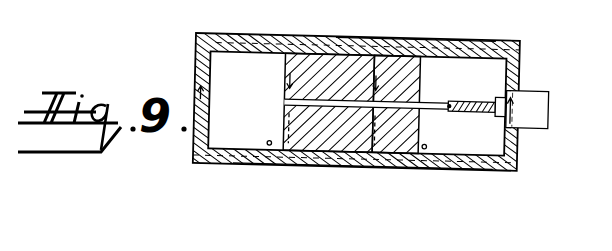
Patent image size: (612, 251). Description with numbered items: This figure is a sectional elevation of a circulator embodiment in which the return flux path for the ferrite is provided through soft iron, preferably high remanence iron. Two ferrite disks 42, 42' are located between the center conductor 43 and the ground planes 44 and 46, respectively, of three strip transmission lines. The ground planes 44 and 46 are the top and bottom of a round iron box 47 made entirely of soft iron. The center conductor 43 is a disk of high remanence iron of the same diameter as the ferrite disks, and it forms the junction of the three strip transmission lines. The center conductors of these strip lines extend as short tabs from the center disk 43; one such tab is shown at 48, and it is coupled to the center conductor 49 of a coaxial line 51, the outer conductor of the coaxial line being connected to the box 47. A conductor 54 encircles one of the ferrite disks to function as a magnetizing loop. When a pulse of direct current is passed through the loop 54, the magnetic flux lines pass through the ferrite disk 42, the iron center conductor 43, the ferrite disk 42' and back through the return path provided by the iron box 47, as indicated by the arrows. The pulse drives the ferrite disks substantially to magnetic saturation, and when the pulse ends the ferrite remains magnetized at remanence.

The ferrite disk 42 is at (329, 83).
The ferrite disk 42' is at (372, 127).
The center conductor 43 is at (287, 103).
The ground plane 44 is at (353, 35).
The ground plane 46 is at (304, 164).
The iron box 47 is at (196, 76).
The tab 48 is at (436, 105).
The center conductor of coaxial line 49 is at (471, 103).
The coaxial line 51 is at (538, 88).
The conductor 54 is at (270, 144).